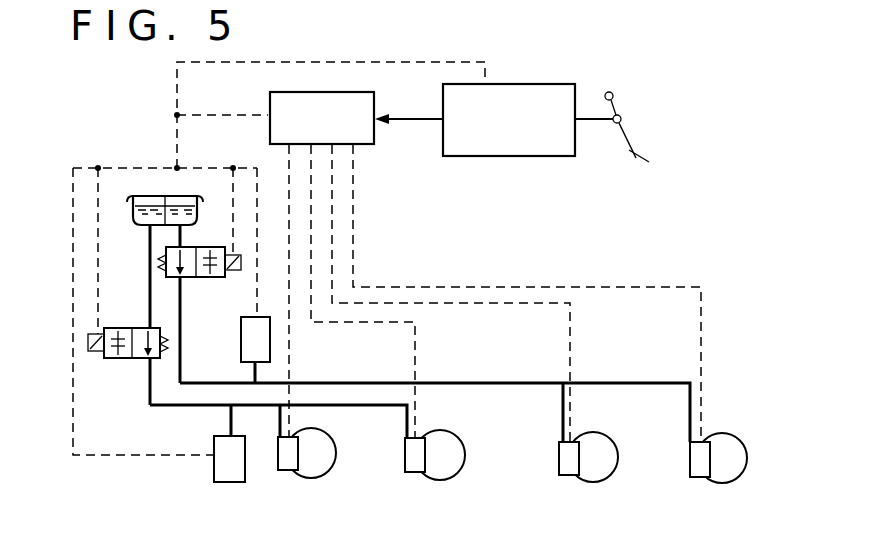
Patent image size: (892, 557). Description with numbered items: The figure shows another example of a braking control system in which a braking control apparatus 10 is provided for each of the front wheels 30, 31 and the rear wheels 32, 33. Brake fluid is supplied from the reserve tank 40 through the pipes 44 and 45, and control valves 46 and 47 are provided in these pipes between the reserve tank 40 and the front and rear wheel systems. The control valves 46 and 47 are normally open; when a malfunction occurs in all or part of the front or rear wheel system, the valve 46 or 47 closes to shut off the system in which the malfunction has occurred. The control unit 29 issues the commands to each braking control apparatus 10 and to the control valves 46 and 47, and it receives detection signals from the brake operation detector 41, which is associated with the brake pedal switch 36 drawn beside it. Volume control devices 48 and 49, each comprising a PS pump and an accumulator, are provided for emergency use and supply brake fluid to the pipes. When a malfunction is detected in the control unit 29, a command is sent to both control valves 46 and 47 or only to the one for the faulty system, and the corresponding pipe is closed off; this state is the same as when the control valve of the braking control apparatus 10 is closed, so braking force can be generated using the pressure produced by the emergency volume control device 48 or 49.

The braking control apparatus 10 is at (284, 472).
The control unit 29 is at (372, 137).
The front wheel 30 is at (735, 483).
The front wheel 31 is at (612, 480).
The rear wheel 32 is at (463, 478).
The rear wheel 33 is at (330, 478).
The brake pedal switch 36 is at (647, 151).
The reserve tank 40 is at (192, 196).
The brake operation detector 41 is at (552, 158).
The pipe 44 is at (492, 382).
The pipe 45 is at (372, 410).
The control valve 46 is at (215, 280).
The control valve 47 is at (110, 360).
The volume control device 48 is at (241, 350).
The volume control device 49 is at (222, 482).